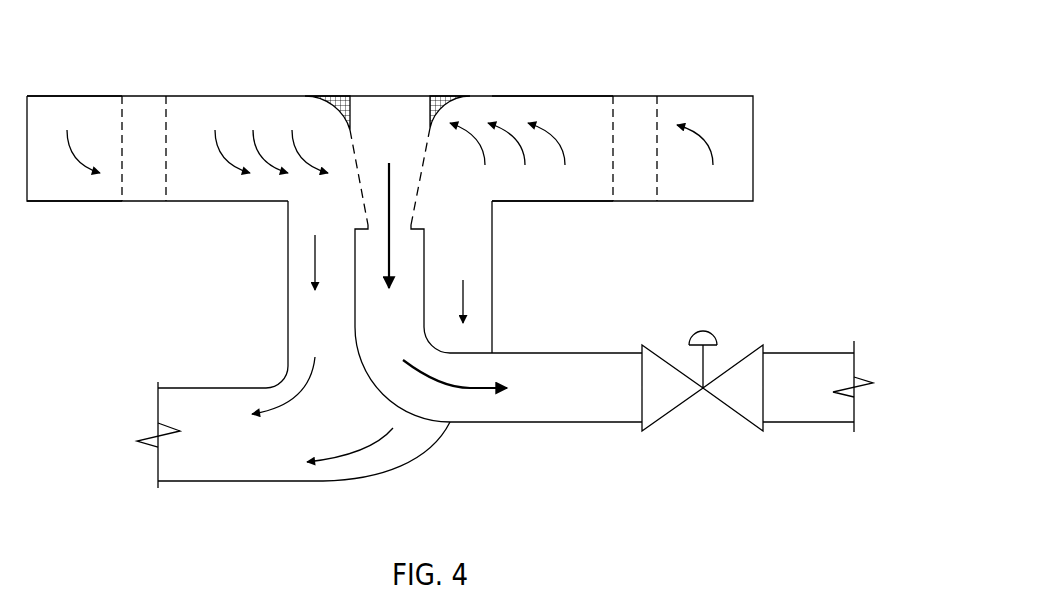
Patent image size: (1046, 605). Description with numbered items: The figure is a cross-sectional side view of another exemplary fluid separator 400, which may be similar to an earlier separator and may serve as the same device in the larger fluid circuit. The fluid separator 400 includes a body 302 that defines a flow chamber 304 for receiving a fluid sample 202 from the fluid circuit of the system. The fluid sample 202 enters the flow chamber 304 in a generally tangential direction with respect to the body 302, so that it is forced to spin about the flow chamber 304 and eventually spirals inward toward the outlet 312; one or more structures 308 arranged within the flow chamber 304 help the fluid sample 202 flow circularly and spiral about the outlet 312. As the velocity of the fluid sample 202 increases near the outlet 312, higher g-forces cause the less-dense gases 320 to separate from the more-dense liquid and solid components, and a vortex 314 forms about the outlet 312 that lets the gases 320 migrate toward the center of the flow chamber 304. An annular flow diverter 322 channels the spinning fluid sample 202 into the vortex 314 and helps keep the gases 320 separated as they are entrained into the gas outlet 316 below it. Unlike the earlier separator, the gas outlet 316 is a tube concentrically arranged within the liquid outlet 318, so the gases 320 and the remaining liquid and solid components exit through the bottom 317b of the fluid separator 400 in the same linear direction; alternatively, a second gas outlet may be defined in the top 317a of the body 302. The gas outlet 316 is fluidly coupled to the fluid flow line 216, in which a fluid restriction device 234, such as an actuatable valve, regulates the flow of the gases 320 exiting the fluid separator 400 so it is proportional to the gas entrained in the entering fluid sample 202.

The fluid separator 400 is at (450, 255).
The body 302 is at (421, 143).
The flow chamber 304 is at (97, 107).
The structures 308 is at (167, 185).
The outlet 312 is at (312, 208).
The vortex 314 is at (423, 175).
The gas outlet 316 is at (540, 353).
The fluid flow line 216 is at (661, 368).
The top 317a is at (540, 96).
The bottom 317b is at (570, 201).
The liquid outlet 318 is at (240, 388).
The gases 320 is at (391, 257).
The annular flow diverter 322 is at (337, 93).
The fluid sample 202 is at (73, 160).
The fluid restriction device 234 is at (743, 357).